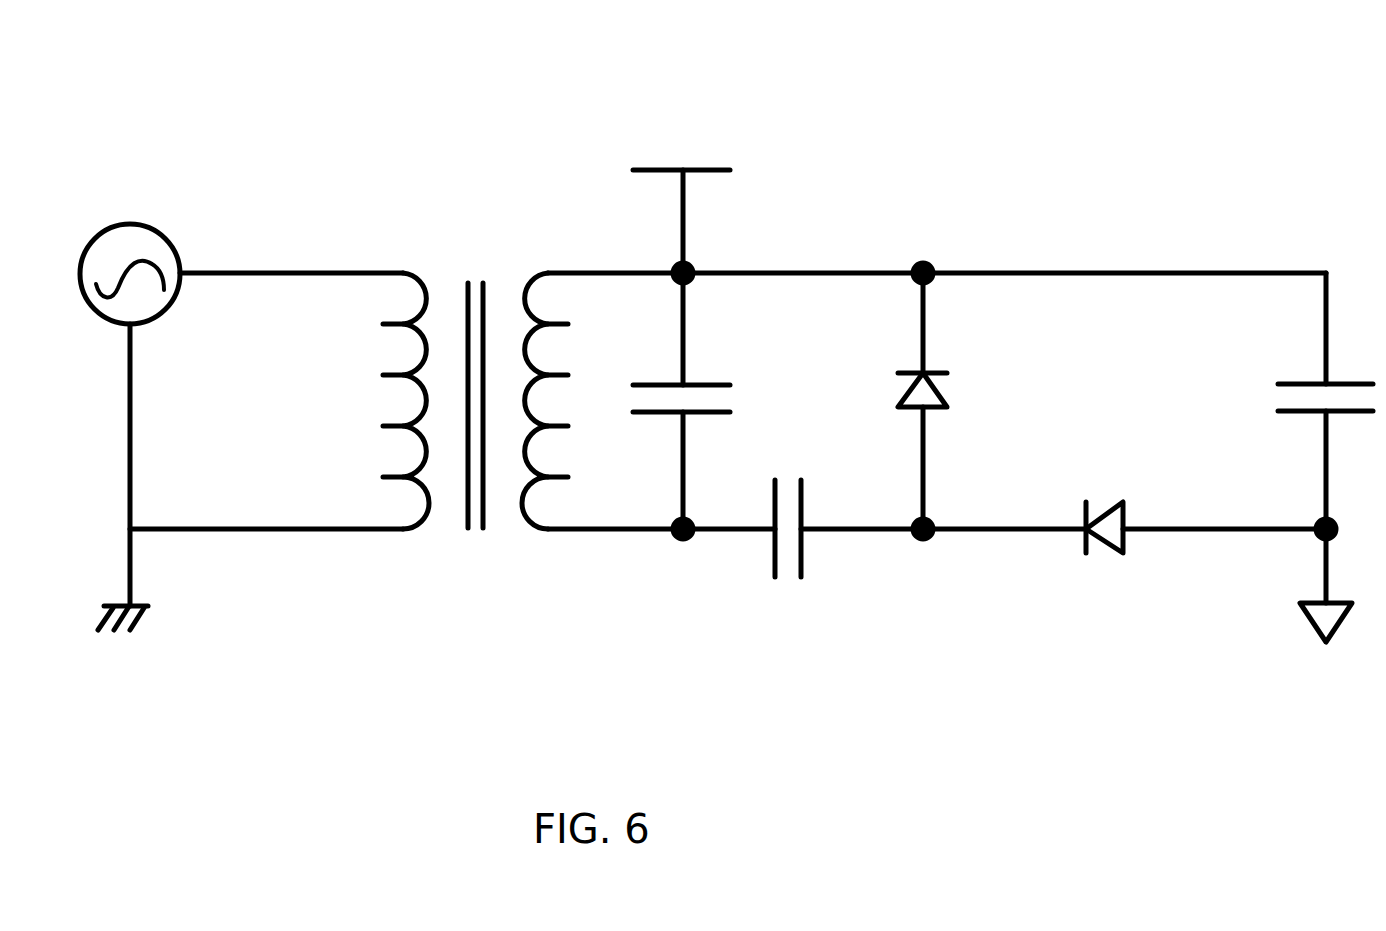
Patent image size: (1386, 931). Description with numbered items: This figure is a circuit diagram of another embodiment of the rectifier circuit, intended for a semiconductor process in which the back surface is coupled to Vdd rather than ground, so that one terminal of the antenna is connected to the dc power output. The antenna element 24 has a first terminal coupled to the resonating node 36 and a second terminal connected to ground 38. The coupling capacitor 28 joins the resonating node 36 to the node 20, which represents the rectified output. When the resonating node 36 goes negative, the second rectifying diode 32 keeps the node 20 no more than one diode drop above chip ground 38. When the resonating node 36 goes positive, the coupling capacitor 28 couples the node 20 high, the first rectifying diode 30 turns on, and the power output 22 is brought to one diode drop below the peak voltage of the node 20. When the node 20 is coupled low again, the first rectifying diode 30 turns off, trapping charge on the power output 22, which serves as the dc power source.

The node 20 is at (917, 533).
The power output 22 is at (855, 270).
The antenna element 24 is at (523, 293).
The coupling capacitor 28 is at (770, 557).
The first rectifying diode 30 is at (937, 390).
The second rectifying diode 32 is at (1110, 542).
The resonating node 36 is at (620, 530).
The ground 38 is at (1322, 575).